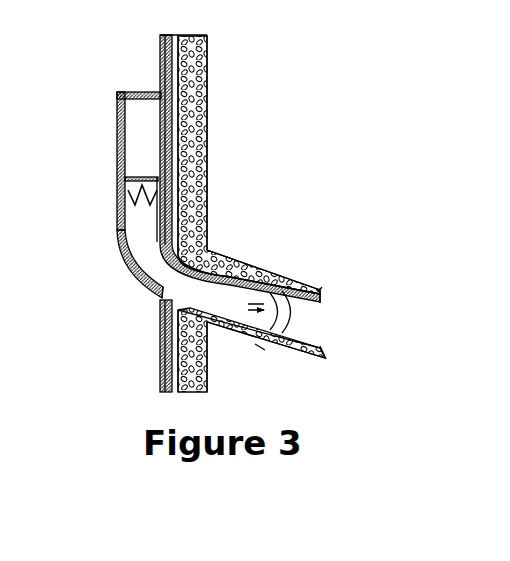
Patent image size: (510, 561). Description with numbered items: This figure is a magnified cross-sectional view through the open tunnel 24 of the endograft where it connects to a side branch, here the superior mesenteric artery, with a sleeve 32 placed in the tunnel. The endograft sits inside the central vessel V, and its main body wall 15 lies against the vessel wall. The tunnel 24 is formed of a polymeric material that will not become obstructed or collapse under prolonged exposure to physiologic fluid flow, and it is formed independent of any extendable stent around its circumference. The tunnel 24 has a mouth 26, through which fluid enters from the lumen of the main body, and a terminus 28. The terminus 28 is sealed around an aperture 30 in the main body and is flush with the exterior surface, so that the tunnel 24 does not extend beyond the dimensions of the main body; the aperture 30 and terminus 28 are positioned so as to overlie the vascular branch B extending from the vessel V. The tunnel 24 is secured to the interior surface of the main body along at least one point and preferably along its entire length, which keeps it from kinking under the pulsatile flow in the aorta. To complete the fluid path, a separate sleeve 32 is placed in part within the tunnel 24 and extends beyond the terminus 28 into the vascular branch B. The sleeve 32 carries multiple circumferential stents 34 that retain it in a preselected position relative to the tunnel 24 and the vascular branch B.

The main body wall 15 is at (165, 30).
The open tunnel 24 is at (116, 143).
The mouth 26 is at (128, 90).
The terminus 28 is at (155, 300).
The aperture 30 is at (163, 330).
The sleeve 32 is at (139, 236).
The circumferential stents 34 is at (127, 190).
The vessel V is at (210, 135).
The vascular branch B is at (280, 312).